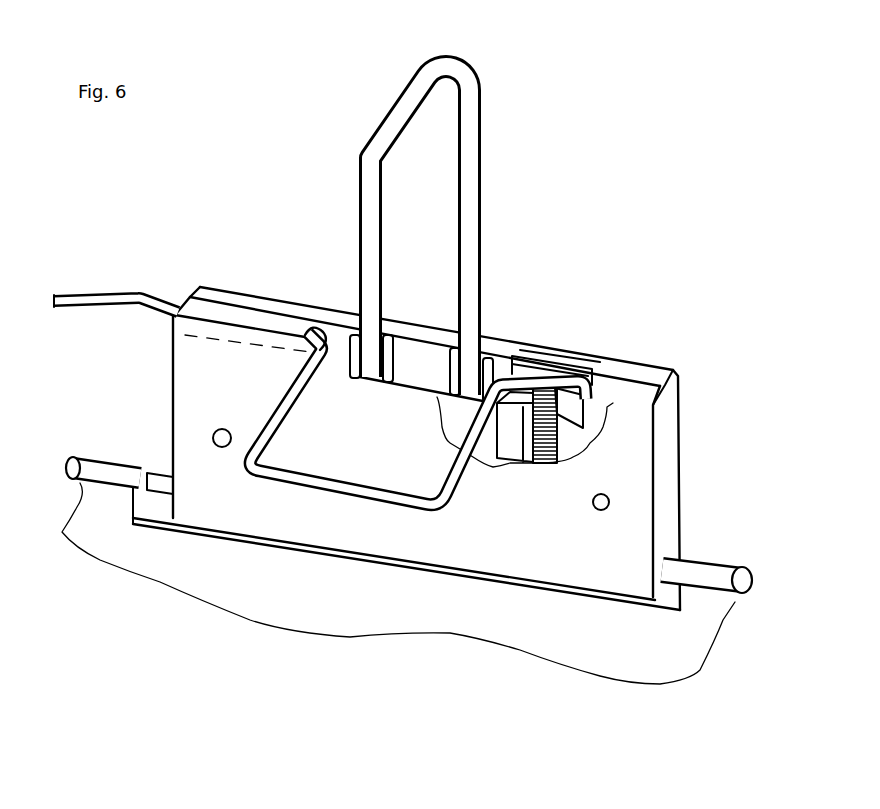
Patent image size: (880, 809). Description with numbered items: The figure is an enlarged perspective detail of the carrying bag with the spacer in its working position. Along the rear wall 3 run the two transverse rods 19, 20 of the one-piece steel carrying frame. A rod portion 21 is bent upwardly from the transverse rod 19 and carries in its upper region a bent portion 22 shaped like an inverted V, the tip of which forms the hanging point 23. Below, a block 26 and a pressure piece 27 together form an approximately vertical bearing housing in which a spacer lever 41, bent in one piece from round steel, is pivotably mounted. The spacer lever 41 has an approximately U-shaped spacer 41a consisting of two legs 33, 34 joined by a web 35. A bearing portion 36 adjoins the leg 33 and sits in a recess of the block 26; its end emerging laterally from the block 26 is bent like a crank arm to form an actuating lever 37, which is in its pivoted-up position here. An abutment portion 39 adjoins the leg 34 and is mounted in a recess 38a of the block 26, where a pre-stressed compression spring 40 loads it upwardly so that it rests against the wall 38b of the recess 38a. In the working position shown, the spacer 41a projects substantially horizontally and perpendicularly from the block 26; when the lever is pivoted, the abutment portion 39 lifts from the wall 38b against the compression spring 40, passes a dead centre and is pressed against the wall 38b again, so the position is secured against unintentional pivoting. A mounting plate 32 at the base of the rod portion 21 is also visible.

The rear wall 3 is at (130, 533).
The transverse rod 19 is at (75, 458).
The transverse rod 20 is at (745, 577).
The rod portion 21 is at (372, 223).
The bent portion 22 is at (404, 113).
The hanging point 23 is at (458, 175).
The block 26 is at (343, 520).
The pressure piece 27 is at (668, 480).
The mounting plate 32 is at (400, 375).
The leg 33 is at (287, 407).
The leg 34 is at (477, 492).
The web 35 is at (313, 487).
The bearing portion 36 is at (245, 338).
The actuating lever 37 is at (97, 272).
The recess 38a is at (600, 387).
The wall 38b is at (563, 363).
The abutment portion 39 is at (530, 360).
The compression spring 40 is at (540, 465).
The spacer lever 41 is at (393, 512).
The spacer 41a is at (266, 484).